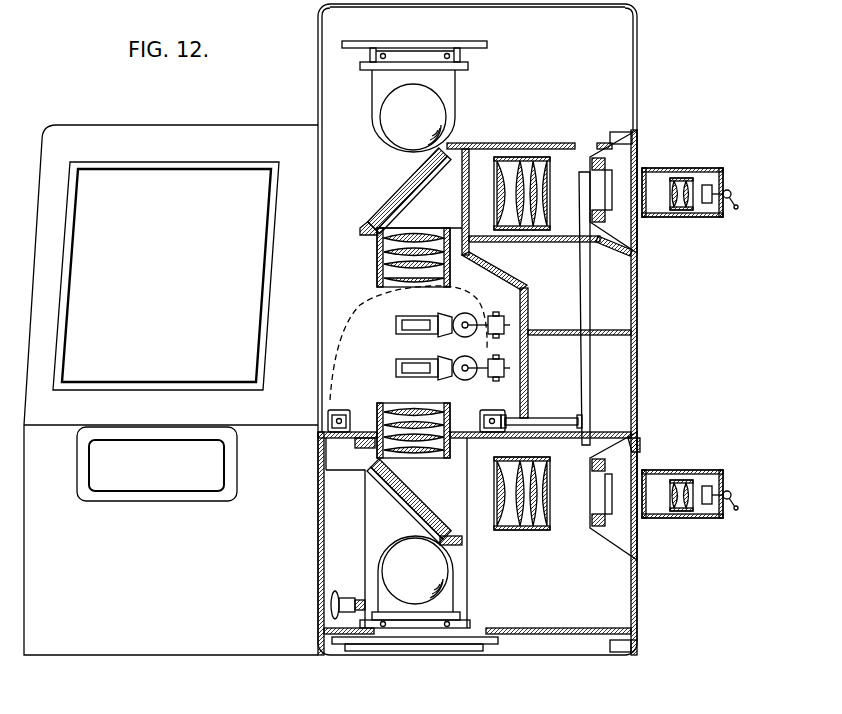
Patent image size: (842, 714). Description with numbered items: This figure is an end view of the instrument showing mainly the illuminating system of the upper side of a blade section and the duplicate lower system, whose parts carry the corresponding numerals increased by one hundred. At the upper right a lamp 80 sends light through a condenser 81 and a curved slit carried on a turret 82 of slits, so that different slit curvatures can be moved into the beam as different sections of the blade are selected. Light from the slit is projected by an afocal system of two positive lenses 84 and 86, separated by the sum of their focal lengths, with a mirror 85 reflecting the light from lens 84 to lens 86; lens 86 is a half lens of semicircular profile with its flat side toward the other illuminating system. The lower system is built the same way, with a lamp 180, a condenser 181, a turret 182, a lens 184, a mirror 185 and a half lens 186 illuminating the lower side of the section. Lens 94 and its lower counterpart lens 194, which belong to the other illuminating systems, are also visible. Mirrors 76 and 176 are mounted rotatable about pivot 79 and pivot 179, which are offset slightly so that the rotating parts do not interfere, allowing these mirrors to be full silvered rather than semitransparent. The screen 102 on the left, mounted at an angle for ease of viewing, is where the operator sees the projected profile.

The screen 102 is at (166, 276).
The positive lens 94 is at (392, 111).
The positive lens 84 is at (504, 157).
The mirror 85 is at (416, 182).
The positive lens 86 is at (378, 258).
The mirror 76 is at (398, 322).
The pivot 79 is at (465, 323).
The mirror 176 is at (398, 366).
The pivot 179 is at (455, 379).
The positive lens 186 is at (379, 415).
The mirror 185 is at (408, 493).
The positive lens 194 is at (403, 551).
The positive lens 184 is at (519, 532).
The turret of slits 82 is at (611, 196).
The condenser 81 is at (676, 178).
The lamp 80 is at (707, 186).
The turret of slits 182 is at (612, 498).
The condenser 181 is at (676, 480).
The lamp 180 is at (708, 488).